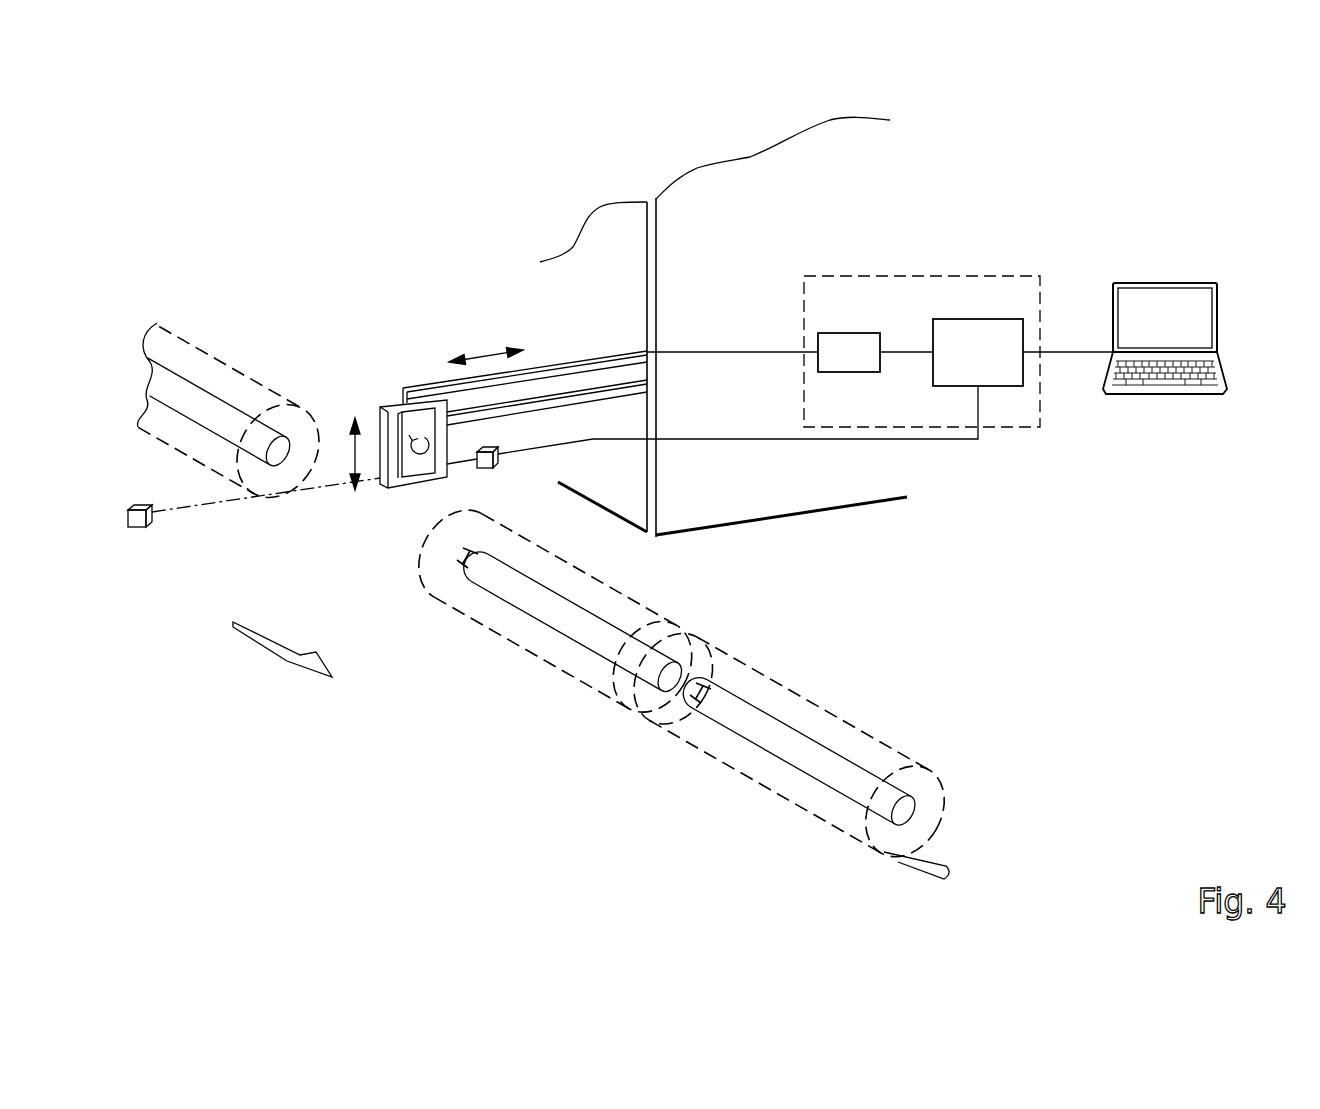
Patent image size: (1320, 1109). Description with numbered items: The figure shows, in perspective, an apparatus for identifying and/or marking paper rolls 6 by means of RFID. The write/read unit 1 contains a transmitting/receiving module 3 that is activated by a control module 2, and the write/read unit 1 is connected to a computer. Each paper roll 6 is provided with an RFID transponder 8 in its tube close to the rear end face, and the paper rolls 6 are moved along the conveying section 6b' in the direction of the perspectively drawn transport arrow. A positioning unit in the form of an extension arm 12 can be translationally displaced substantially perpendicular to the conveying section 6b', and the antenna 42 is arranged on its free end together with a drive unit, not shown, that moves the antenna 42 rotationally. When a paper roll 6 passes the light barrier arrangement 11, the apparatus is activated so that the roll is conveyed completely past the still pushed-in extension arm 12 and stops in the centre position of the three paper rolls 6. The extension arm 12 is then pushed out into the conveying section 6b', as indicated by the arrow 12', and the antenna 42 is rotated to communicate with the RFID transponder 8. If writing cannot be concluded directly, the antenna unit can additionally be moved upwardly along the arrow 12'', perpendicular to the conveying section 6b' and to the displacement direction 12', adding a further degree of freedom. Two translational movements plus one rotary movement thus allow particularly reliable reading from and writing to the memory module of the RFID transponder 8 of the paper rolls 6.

The write/read unit 1 is at (918, 276).
The control module 2 is at (970, 371).
The transmitting/receiving module 3 is at (841, 369).
The paper roll 6 is at (208, 350).
The conveying section 6b' is at (912, 893).
The RFID transponder 8 is at (453, 545).
The light barrier arrangement 11 is at (497, 468).
The extension arm 12 is at (525, 364).
The arrow (displacement direction of extension arm) 12' is at (487, 333).
The arrow (height variation direction) 12'' is at (254, 509).
The antenna 42 is at (408, 412).